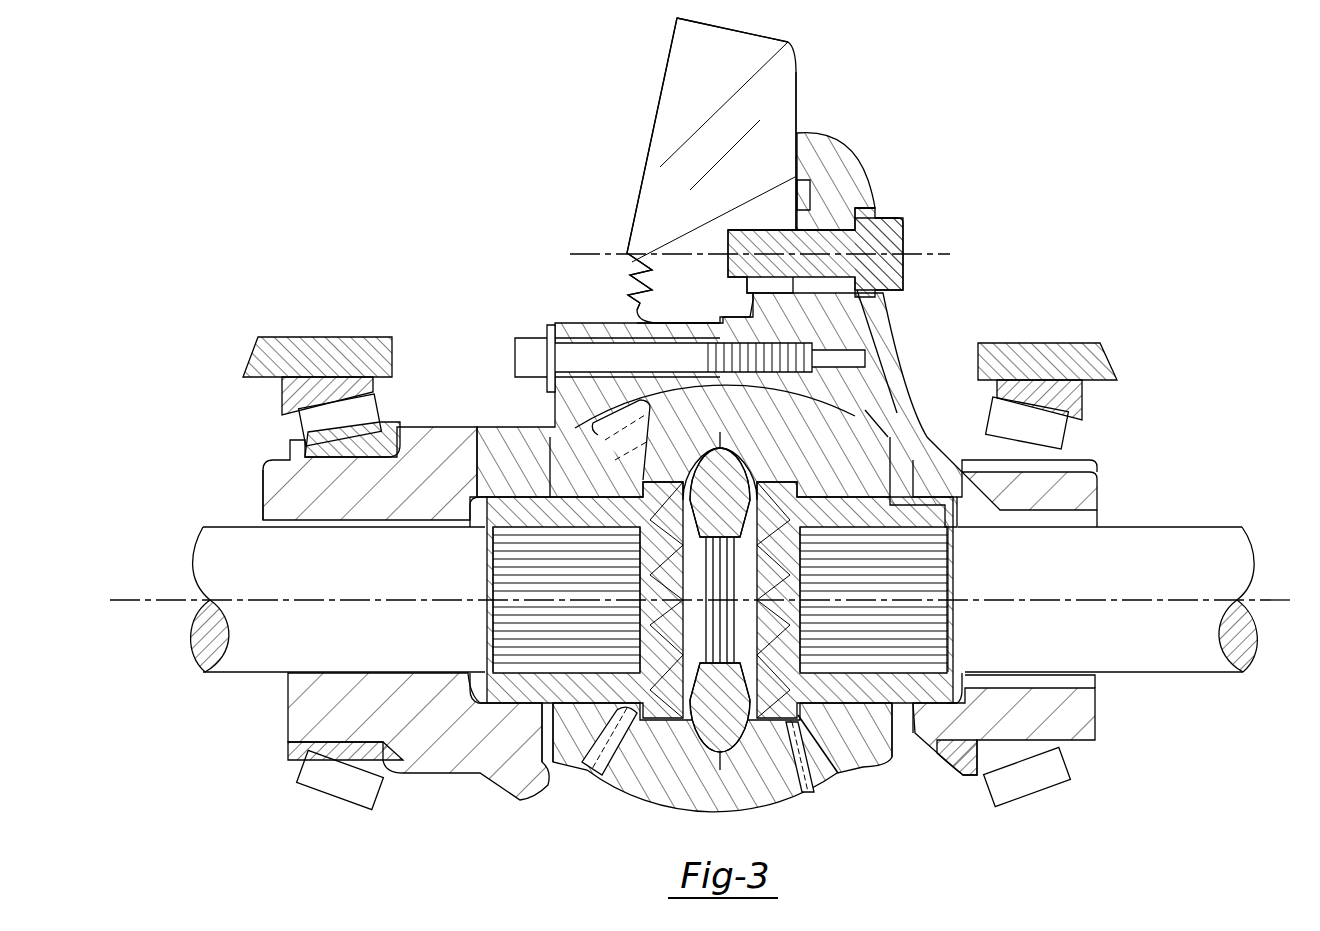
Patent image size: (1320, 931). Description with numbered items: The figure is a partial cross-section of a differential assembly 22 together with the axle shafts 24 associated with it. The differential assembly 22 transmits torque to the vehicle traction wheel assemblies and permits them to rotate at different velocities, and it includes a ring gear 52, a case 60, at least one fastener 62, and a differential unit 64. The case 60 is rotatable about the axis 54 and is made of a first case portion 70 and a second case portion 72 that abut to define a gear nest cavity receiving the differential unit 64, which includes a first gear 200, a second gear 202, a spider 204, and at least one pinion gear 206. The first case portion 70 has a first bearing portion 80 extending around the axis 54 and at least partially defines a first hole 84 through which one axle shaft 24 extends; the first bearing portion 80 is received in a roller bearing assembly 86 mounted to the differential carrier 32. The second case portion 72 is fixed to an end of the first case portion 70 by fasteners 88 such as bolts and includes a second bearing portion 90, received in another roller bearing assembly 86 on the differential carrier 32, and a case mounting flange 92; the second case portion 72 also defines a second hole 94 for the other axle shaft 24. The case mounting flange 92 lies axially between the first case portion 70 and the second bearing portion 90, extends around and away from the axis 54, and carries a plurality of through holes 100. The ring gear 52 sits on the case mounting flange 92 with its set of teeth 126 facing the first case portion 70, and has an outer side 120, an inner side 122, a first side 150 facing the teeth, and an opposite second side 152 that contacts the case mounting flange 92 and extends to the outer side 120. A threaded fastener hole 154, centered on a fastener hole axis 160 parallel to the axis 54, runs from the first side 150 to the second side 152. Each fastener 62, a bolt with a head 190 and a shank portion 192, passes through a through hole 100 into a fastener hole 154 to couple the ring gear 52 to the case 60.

The differential assembly 22 is at (542, 238).
The axle shaft 24 is at (278, 581).
The differential carrier 32 is at (258, 350).
The ring gear 52 is at (756, 127).
The axis 54 is at (143, 598).
The case 60 is at (420, 421).
The fastener 62 is at (892, 212).
The differential unit 64 is at (560, 452).
The first case portion 70 is at (461, 426).
The second case portion 72 is at (903, 370).
The first bearing portion 80 is at (263, 480).
The first hole 84 is at (271, 679).
The roller bearing assembly 86 is at (280, 394).
The fastener 88 is at (526, 336).
The second bearing portion 90 is at (1097, 478).
The case mounting flange 92 is at (824, 132).
The second hole 94 is at (1104, 685).
The through hole 100 is at (838, 220).
The outer side 120 is at (748, 33).
The inner side 122 is at (627, 323).
The set of teeth 126 is at (641, 123).
The first side 150 is at (747, 284).
The second side 152 is at (797, 90).
The fastener hole 154 is at (772, 228).
The fastener hole axis 160 is at (943, 255).
The head 190 is at (905, 230).
The shank portion 192 is at (720, 232).
The first gear 200 is at (568, 509).
The second gear 202 is at (838, 509).
The spider 204 is at (746, 470).
The pinion gear 206 is at (632, 423).